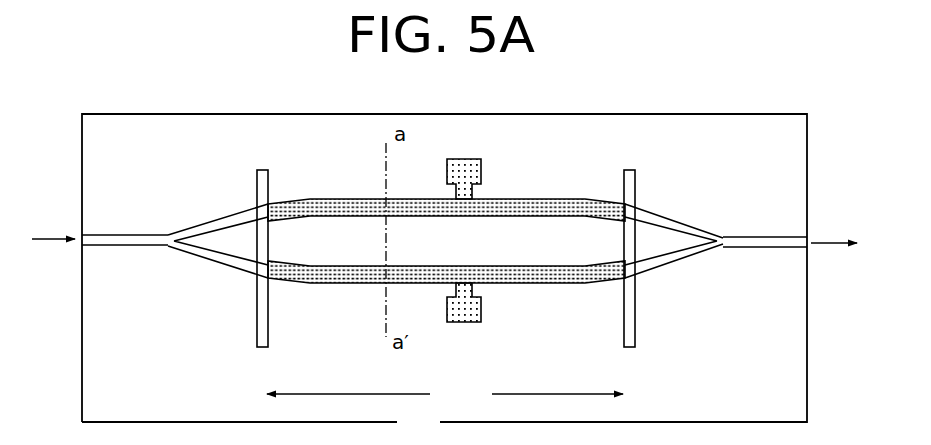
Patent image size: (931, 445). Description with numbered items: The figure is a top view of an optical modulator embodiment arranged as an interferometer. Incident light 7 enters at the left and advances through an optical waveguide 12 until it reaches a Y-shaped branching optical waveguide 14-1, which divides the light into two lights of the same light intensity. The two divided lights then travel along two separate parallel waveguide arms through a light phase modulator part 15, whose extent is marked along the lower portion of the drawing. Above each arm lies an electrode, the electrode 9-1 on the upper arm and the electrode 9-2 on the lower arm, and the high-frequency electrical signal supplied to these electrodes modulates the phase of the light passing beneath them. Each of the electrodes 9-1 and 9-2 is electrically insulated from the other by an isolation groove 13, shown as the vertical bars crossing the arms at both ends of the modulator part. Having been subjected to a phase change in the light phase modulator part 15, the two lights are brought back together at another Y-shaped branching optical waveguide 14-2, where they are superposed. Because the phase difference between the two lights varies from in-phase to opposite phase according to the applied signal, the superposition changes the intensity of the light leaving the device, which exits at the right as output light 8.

The incident light 7 is at (50, 237).
The output light 8 is at (828, 242).
The optical waveguide 12 is at (123, 237).
The Y-shaped branching optical waveguide 14-1 is at (167, 237).
The Y-shaped branching optical waveguide 14-2 is at (723, 240).
The electrode 9-1 is at (291, 202).
The electrode 9-2 is at (292, 281).
The isolation groove 13 is at (635, 182).
The light phase modulator part 15 is at (445, 397).